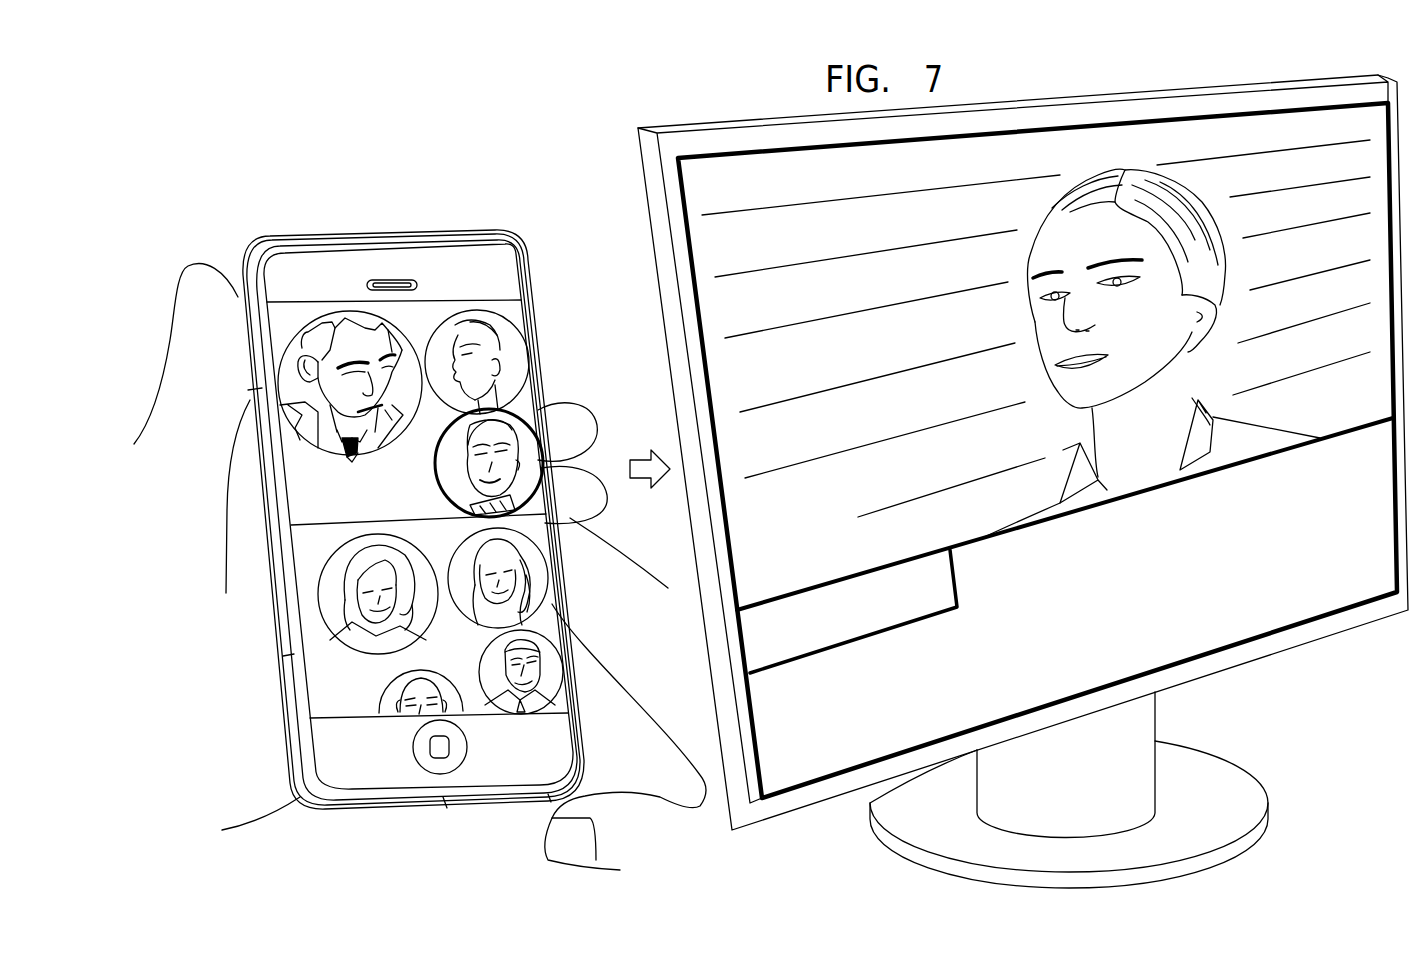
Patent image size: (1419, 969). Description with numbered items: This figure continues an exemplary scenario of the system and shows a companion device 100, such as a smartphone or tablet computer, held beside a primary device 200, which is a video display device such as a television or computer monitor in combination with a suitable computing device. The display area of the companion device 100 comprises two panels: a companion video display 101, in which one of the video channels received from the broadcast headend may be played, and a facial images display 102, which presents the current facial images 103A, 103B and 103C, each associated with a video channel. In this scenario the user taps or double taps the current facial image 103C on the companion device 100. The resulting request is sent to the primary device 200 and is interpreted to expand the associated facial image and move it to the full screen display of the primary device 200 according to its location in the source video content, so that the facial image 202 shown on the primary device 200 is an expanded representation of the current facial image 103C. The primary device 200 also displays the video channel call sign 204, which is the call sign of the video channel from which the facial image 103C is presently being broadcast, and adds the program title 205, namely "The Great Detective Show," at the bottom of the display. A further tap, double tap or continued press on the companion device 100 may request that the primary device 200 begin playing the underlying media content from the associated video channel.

The companion device 100 is at (258, 228).
The companion video display 101 is at (322, 664).
The facial images display 102 is at (520, 318).
The current facial image 103A is at (327, 327).
The current facial image 103B is at (482, 327).
The current facial image 103C is at (455, 457).
The primary device 200 is at (710, 145).
The facial image 202 is at (1060, 201).
The video channel call sign 204 is at (848, 583).
The program title 205 is at (1345, 477).